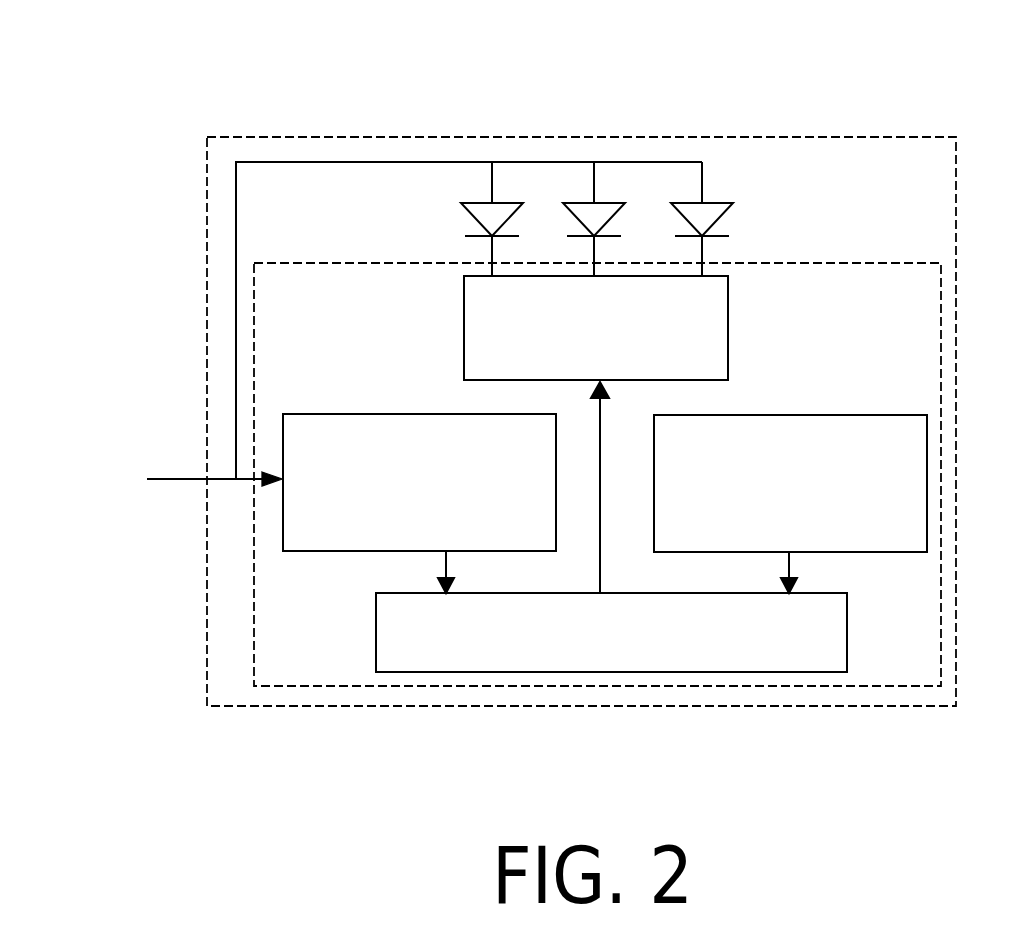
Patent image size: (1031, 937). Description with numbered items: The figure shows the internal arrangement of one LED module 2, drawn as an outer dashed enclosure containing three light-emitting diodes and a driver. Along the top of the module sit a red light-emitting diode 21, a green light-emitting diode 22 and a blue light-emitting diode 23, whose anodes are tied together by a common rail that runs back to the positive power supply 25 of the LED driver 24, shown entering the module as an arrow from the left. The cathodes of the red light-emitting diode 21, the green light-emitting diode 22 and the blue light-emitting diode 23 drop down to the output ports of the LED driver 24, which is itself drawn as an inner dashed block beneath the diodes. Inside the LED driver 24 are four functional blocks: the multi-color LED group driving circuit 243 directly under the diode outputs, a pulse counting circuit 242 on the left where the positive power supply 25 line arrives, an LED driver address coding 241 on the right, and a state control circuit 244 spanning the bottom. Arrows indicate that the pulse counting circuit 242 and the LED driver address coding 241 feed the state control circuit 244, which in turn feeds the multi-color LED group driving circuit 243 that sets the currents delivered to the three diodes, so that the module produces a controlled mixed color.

The LED module 2 is at (208, 138).
The red light-emitting diode 21 is at (574, 203).
The green light-emitting diode 22 is at (472, 203).
The blue light-emitting diode 23 is at (688, 203).
The LED driver 24 is at (938, 260).
The LED driver address coding 241 is at (927, 552).
The pulse counting circuit 242 is at (323, 551).
The multi-color LED group driving circuit 243 is at (728, 277).
The state control circuit 244 is at (569, 672).
The positive power supply 25 is at (177, 479).